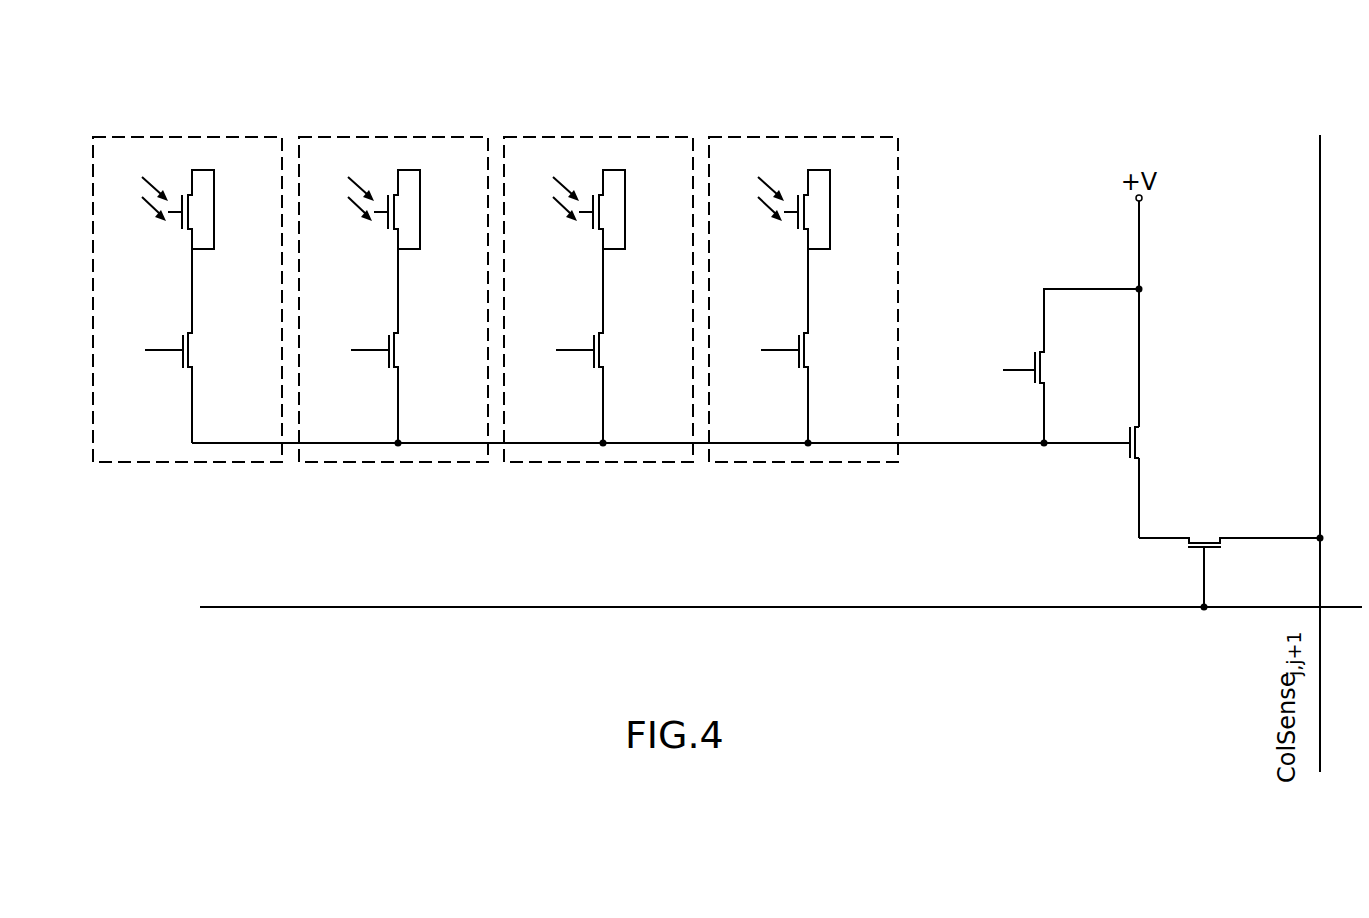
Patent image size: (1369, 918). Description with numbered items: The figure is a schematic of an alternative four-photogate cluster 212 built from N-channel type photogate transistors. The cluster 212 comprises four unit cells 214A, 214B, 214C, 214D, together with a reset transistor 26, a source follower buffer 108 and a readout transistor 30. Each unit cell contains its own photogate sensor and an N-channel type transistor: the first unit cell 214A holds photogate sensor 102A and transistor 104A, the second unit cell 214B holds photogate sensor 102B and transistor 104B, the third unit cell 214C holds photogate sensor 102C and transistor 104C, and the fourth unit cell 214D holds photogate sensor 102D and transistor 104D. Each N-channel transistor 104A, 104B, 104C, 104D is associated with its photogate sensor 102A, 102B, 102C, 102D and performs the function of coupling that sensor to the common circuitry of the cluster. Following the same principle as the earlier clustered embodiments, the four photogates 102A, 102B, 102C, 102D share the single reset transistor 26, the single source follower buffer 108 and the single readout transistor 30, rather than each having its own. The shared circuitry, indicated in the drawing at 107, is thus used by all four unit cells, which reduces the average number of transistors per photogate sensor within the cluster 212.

The unit cell 214A is at (188, 135).
The unit cell 214B is at (394, 135).
The unit cell 214C is at (599, 135).
The unit cell 214D is at (804, 135).
The photogate sensor 102A is at (211, 209).
The photogate sensor 102B is at (416, 209).
The photogate sensor 102C is at (622, 209).
The photogate sensor 102D is at (827, 209).
The N-channel type transistor 104A is at (181, 346).
The N-channel type transistor 104B is at (386, 346).
The N-channel type transistor 104C is at (592, 346).
The N-channel type transistor 104D is at (795, 346).
The reset transistor 26 is at (1050, 366).
The source follower buffer 108 is at (1161, 443).
The readout transistor 30 is at (1231, 559).
The shared readout circuit 107 is at (1099, 482).
The four-photogate cluster 212 is at (855, 640).